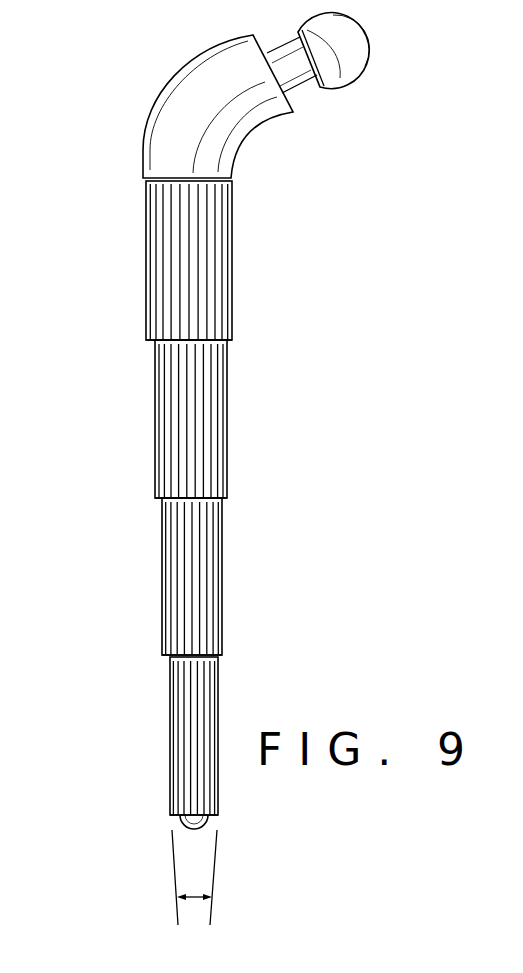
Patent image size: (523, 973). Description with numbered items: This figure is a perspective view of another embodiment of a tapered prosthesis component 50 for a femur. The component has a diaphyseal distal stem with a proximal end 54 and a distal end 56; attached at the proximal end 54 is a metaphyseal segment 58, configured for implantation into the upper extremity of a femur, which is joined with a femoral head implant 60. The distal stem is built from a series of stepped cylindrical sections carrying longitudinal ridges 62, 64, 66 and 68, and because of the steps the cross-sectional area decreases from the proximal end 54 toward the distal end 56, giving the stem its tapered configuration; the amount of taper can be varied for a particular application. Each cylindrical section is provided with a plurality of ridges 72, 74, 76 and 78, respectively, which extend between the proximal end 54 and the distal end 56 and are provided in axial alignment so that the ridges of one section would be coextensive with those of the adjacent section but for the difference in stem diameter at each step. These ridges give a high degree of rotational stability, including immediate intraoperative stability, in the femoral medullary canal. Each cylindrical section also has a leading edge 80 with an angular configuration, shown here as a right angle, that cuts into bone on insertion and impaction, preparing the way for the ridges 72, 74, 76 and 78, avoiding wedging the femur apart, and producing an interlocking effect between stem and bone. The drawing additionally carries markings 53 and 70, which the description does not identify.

The tapered prosthesis component 50 is at (221, 33).
The modular stem body 53 is at (246, 436).
The proximal end 54 is at (137, 211).
The distal end 56 is at (193, 846).
The metaphyseal segment 58 is at (183, 78).
The femoral head implant 60 is at (372, 63).
The longitudinal ridge section 62 is at (233, 258).
The longitudinal ridge section 64 is at (229, 376).
The longitudinal ridge section 66 is at (222, 547).
The longitudinal ridge section 68 is at (217, 678).
The segment width 70 is at (192, 896).
The ridges 72 is at (203, 262).
The ridges 74 is at (202, 405).
The ridges 76 is at (203, 577).
The ridges 78 is at (197, 732).
The leading edge 80 is at (153, 341).